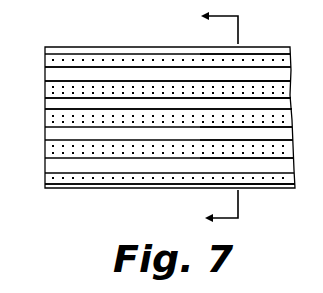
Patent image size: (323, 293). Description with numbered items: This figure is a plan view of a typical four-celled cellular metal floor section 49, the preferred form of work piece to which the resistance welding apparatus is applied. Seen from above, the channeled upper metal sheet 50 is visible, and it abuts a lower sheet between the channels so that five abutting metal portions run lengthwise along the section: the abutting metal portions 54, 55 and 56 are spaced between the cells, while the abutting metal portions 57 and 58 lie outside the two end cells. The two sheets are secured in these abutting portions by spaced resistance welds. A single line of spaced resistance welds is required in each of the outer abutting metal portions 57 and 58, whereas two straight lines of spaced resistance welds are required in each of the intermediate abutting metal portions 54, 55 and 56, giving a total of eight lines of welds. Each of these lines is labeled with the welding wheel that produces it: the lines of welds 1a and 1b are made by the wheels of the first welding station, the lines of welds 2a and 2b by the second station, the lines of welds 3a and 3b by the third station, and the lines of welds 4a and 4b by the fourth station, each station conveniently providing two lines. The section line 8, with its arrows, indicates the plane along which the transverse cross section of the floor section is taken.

The cellular floor section 49 is at (152, 47).
The channeled upper metal sheet 50 is at (266, 73).
The abutting metal portion 57 is at (45, 61).
The abutting metal portion 54 is at (45, 90).
The abutting metal portion 55 is at (45, 120).
The abutting metal portion 56 is at (45, 149).
The abutting metal portion 58 is at (45, 179).
The line of welds 1a is at (289, 56).
The line of welds 2a is at (292, 86).
The line of welds 3a is at (291, 90).
The line of welds 1b is at (298, 104).
The line of welds 4a is at (290, 120).
The line of welds 2b is at (292, 144).
The line of welds 3b is at (290, 151).
The line of welds 4b is at (290, 175).
The section line 8- 8 is at (209, 116).